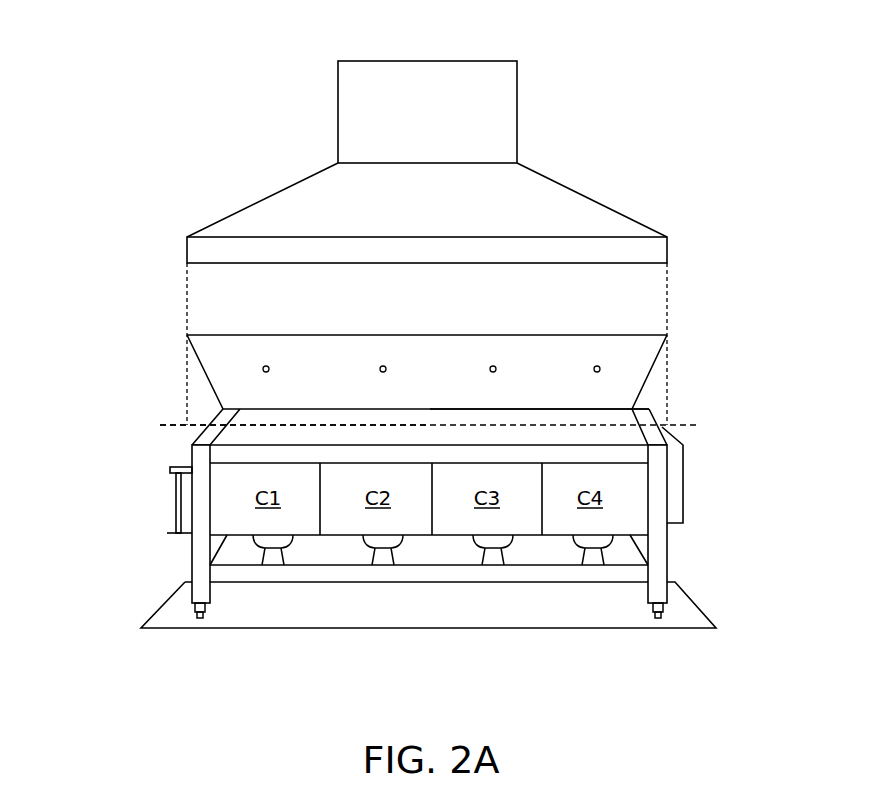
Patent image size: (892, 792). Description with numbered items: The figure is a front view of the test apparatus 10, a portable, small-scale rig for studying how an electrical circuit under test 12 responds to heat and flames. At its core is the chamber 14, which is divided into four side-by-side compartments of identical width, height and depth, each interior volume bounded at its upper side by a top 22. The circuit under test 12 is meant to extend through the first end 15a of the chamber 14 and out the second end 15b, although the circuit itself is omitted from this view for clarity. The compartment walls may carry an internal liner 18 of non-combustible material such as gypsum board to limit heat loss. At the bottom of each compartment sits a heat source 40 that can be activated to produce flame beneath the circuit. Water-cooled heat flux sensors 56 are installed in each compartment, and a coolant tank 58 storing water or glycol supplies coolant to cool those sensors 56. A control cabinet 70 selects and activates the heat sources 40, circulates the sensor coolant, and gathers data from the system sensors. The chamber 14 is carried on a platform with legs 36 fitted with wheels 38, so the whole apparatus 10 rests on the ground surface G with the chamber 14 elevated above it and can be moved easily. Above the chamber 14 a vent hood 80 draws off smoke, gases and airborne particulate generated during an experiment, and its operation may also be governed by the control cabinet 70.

The test apparatus 10 is at (163, 145).
The vent hood 80 is at (518, 120).
The top 22 is at (653, 362).
The heat flux sensors 56 is at (266, 365).
The electrical circuit under test 12 is at (242, 409).
The liner 18 is at (601, 434).
The first end 15a is at (704, 421).
The second end 15b is at (152, 423).
The chamber 14 is at (226, 457).
The coolant tank 58 is at (177, 508).
The control cabinet 70 is at (684, 470).
The legs 36 is at (192, 563).
The wheels 38 is at (200, 614).
The heat source 40 is at (286, 565).
The ground surface G is at (388, 630).